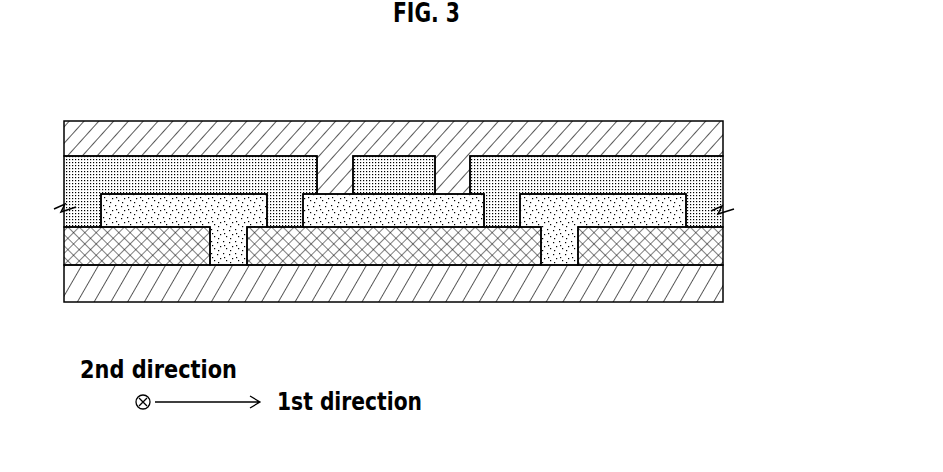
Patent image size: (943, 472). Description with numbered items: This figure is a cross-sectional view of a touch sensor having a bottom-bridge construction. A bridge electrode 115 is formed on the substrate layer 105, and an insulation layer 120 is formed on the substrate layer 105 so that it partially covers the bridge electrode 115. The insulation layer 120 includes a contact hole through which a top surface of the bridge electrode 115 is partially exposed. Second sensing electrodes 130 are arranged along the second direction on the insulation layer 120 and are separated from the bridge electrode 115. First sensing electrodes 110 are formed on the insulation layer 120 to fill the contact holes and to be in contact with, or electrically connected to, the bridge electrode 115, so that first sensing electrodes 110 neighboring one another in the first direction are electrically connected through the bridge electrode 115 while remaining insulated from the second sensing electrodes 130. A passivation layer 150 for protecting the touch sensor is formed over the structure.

The substrate layer 105 is at (725, 282).
The first sensing electrodes 110 is at (201, 172).
The bridge electrode 115 is at (388, 242).
The insulation layer 120 is at (632, 213).
The second sensing electrodes 130 is at (400, 172).
The passivation layer 150 is at (725, 128).